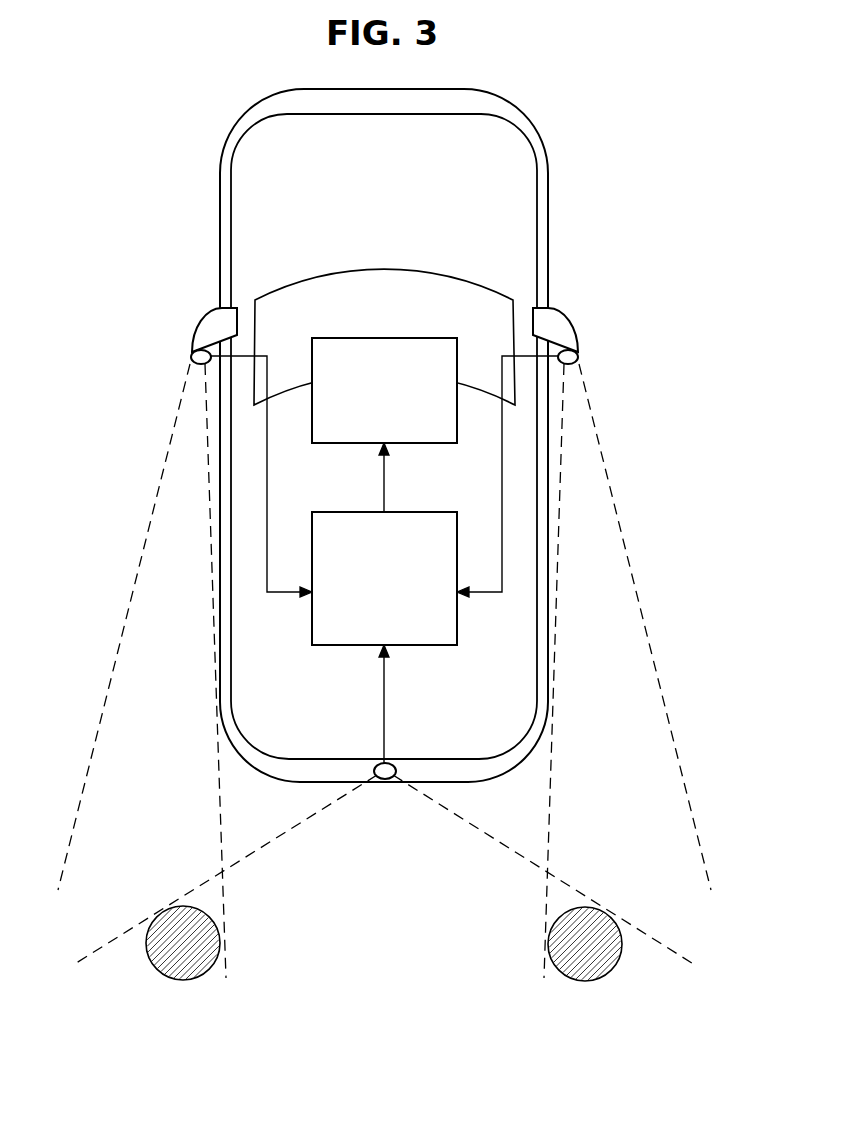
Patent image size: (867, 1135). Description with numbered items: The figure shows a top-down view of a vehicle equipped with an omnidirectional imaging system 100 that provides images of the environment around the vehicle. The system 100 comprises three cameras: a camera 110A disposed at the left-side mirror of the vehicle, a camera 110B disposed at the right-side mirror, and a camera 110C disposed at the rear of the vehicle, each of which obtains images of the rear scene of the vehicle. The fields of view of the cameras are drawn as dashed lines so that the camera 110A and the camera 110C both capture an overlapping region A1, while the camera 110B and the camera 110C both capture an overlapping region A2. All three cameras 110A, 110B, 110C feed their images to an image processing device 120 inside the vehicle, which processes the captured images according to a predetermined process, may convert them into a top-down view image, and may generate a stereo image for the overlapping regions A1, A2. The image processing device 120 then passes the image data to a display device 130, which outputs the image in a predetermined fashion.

The omnidirectional imaging system 100 is at (108, 106).
The camera 110A is at (190, 353).
The camera 110B is at (578, 357).
The camera 110C is at (387, 781).
The image processing device 120 is at (384, 578).
The display device 130 is at (384, 390).
The overlapping region A1 is at (183, 943).
The overlapping region A2 is at (585, 944).